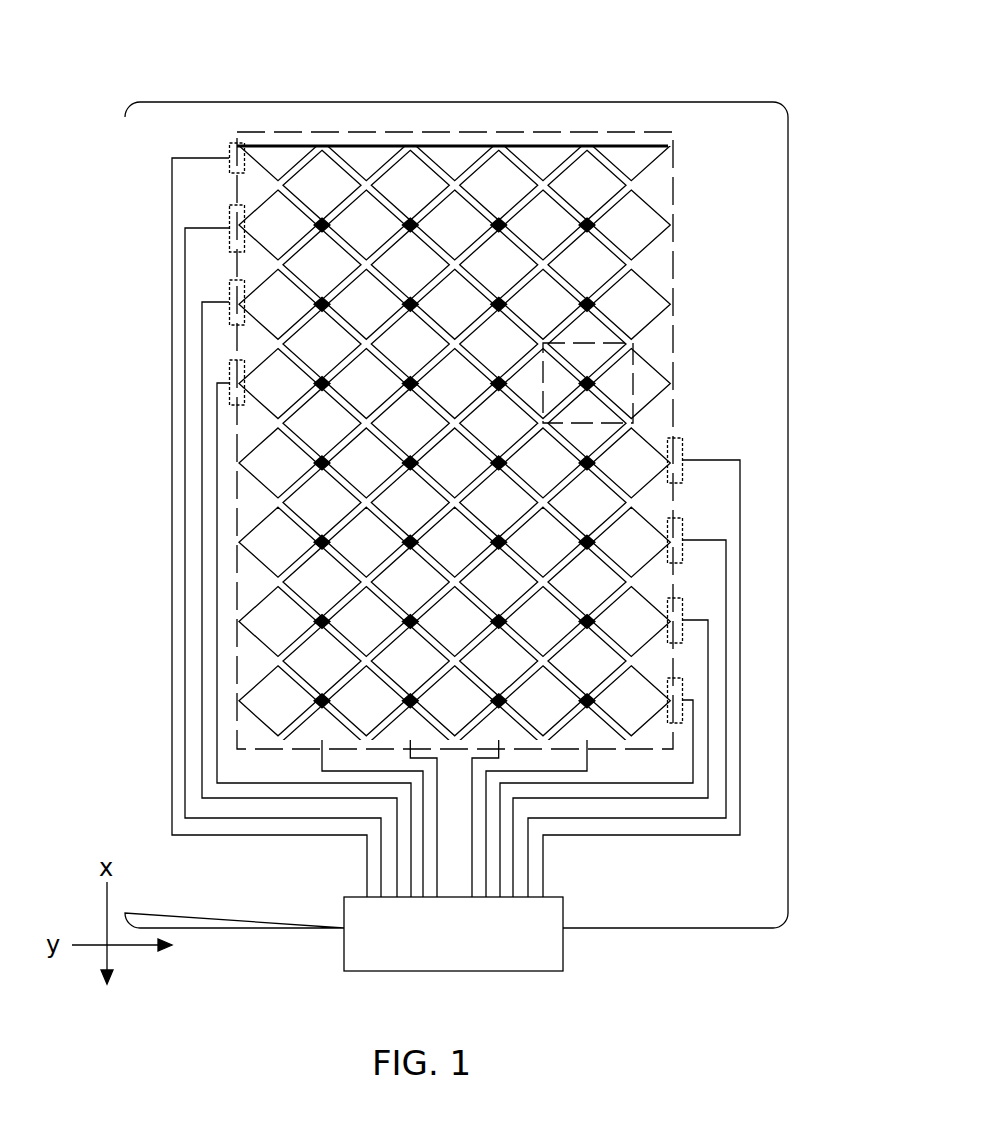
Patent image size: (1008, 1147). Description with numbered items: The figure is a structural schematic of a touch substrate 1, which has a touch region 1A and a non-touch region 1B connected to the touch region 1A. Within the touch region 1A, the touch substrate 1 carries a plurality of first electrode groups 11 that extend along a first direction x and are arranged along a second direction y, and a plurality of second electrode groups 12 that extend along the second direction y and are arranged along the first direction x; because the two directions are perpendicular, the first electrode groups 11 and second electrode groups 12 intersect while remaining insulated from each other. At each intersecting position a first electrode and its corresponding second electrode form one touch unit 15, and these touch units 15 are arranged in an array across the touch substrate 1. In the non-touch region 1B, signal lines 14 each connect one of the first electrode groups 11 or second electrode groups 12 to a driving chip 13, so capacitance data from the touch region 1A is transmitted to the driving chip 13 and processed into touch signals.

The touch substrate 1 is at (264, 70).
The touch region 1A is at (558, 407).
The non-touch region 1B is at (566, 122).
The first electrode groups 11 is at (587, 263).
The second electrode groups 12 is at (640, 297).
The driving chip 13 is at (540, 942).
The signal lines 14 is at (740, 583).
The touch unit 15 is at (633, 383).